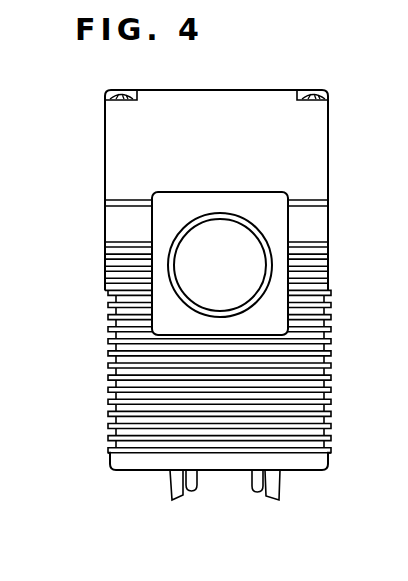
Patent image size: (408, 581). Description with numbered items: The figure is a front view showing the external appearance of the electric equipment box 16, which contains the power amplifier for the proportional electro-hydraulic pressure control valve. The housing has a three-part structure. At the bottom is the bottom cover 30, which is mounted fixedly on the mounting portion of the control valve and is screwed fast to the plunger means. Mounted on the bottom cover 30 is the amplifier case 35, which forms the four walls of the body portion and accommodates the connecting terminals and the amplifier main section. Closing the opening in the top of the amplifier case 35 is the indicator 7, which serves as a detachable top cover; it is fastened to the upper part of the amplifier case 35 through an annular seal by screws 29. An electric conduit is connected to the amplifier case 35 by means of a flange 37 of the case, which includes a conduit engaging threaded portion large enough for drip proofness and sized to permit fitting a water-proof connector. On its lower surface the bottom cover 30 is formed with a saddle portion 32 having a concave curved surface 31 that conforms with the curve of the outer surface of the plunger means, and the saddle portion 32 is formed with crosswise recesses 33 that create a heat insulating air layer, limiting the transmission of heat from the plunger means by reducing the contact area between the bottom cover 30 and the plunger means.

The indicator 7 is at (243, 91).
The screws 29 is at (318, 90).
The flange 37 is at (193, 223).
The electric equipment box 16 is at (322, 331).
The amplifier case 35 is at (322, 378).
The bottom cover 30 is at (328, 455).
The saddle portion 32 is at (168, 478).
The concave curved surface 31 is at (185, 497).
The crosswise recesses 33 is at (221, 509).